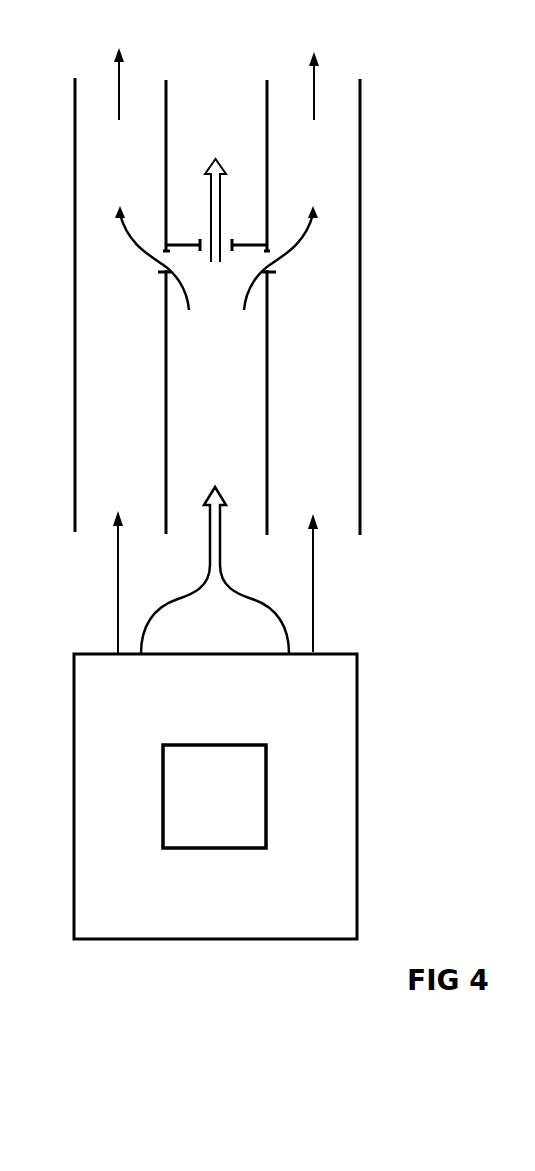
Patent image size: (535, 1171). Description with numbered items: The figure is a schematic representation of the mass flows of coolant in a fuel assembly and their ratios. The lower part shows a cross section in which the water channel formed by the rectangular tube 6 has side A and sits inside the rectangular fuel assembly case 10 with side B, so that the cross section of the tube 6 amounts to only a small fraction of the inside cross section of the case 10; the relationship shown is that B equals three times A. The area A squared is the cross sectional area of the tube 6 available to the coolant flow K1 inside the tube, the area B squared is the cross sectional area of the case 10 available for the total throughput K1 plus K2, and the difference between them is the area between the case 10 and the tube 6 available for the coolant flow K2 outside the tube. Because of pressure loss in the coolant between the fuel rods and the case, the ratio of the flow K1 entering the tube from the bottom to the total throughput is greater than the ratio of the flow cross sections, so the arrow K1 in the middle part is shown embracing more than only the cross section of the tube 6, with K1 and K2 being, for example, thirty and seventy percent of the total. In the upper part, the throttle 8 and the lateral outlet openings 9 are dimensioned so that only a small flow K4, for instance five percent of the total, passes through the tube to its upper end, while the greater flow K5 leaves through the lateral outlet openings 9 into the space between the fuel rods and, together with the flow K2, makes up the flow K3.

The water channel tube 6 is at (164, 400).
The throttle 8 is at (242, 241).
The lateral outlet openings 9 is at (270, 268).
The fuel assembly case 10 is at (358, 225).
The coolant flow into the tube K1 is at (220, 540).
The coolant flow outside the tube K2 is at (115, 583).
The combined coolant flow K3 is at (116, 92).
The coolant flow to the upper tube end K4 is at (208, 191).
The lateral outflow from the tube K5 is at (142, 252).
The side of the rectangular tube A is at (254, 340).
The side of the rectangular case B is at (346, 437).